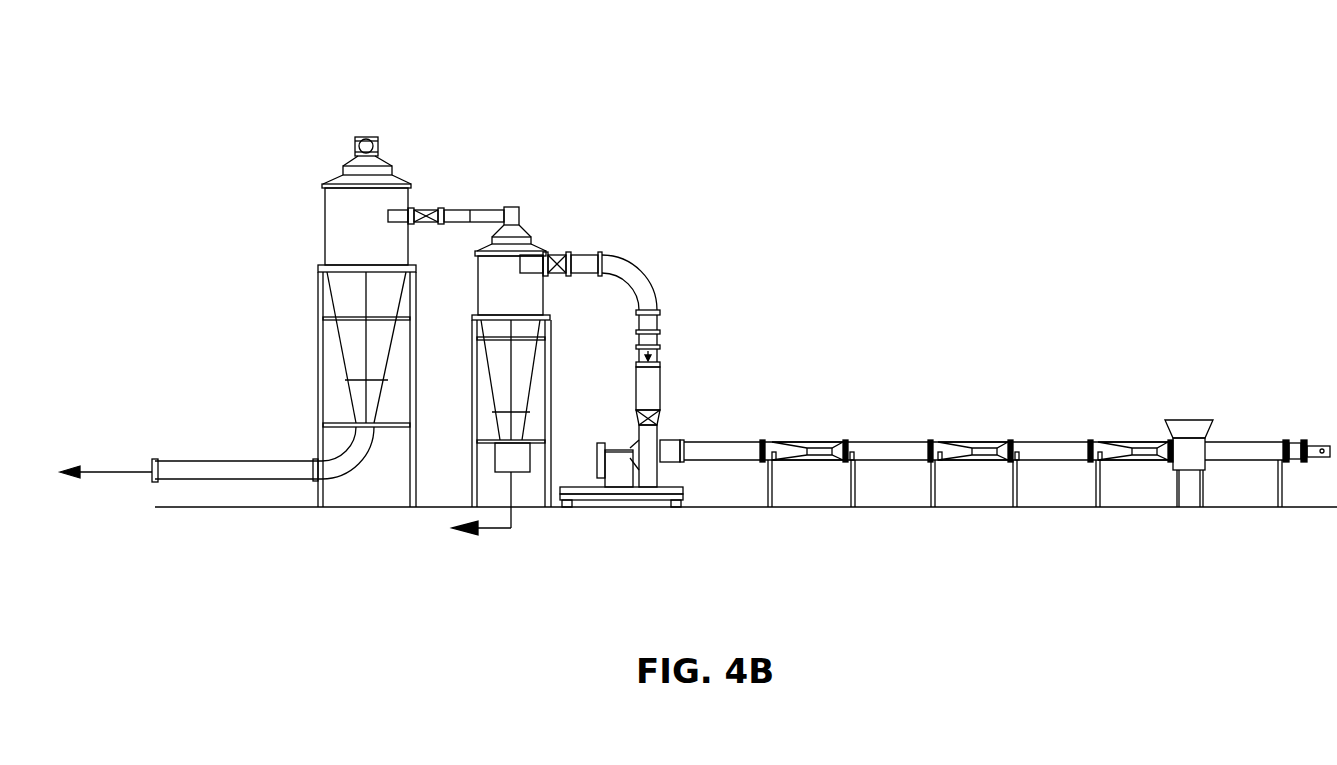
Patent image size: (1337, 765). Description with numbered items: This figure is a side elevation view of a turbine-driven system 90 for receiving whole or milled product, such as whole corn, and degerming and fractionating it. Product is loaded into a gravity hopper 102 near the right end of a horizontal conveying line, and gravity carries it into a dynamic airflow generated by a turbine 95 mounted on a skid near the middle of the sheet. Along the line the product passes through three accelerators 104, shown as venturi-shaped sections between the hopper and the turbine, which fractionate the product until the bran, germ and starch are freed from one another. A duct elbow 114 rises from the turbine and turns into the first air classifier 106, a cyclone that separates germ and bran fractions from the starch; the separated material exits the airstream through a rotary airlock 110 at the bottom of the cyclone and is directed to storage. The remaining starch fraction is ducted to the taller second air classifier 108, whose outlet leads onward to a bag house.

The system 90 is at (850, 138).
The turbine 95 is at (645, 500).
The gravity hopper 102 is at (1190, 420).
The accelerator 104 is at (818, 443).
The first air classifier 106 is at (510, 208).
The second air classifier 108 is at (367, 137).
The rotary airlock 110 is at (518, 474).
The duct elbow 114 is at (637, 267).